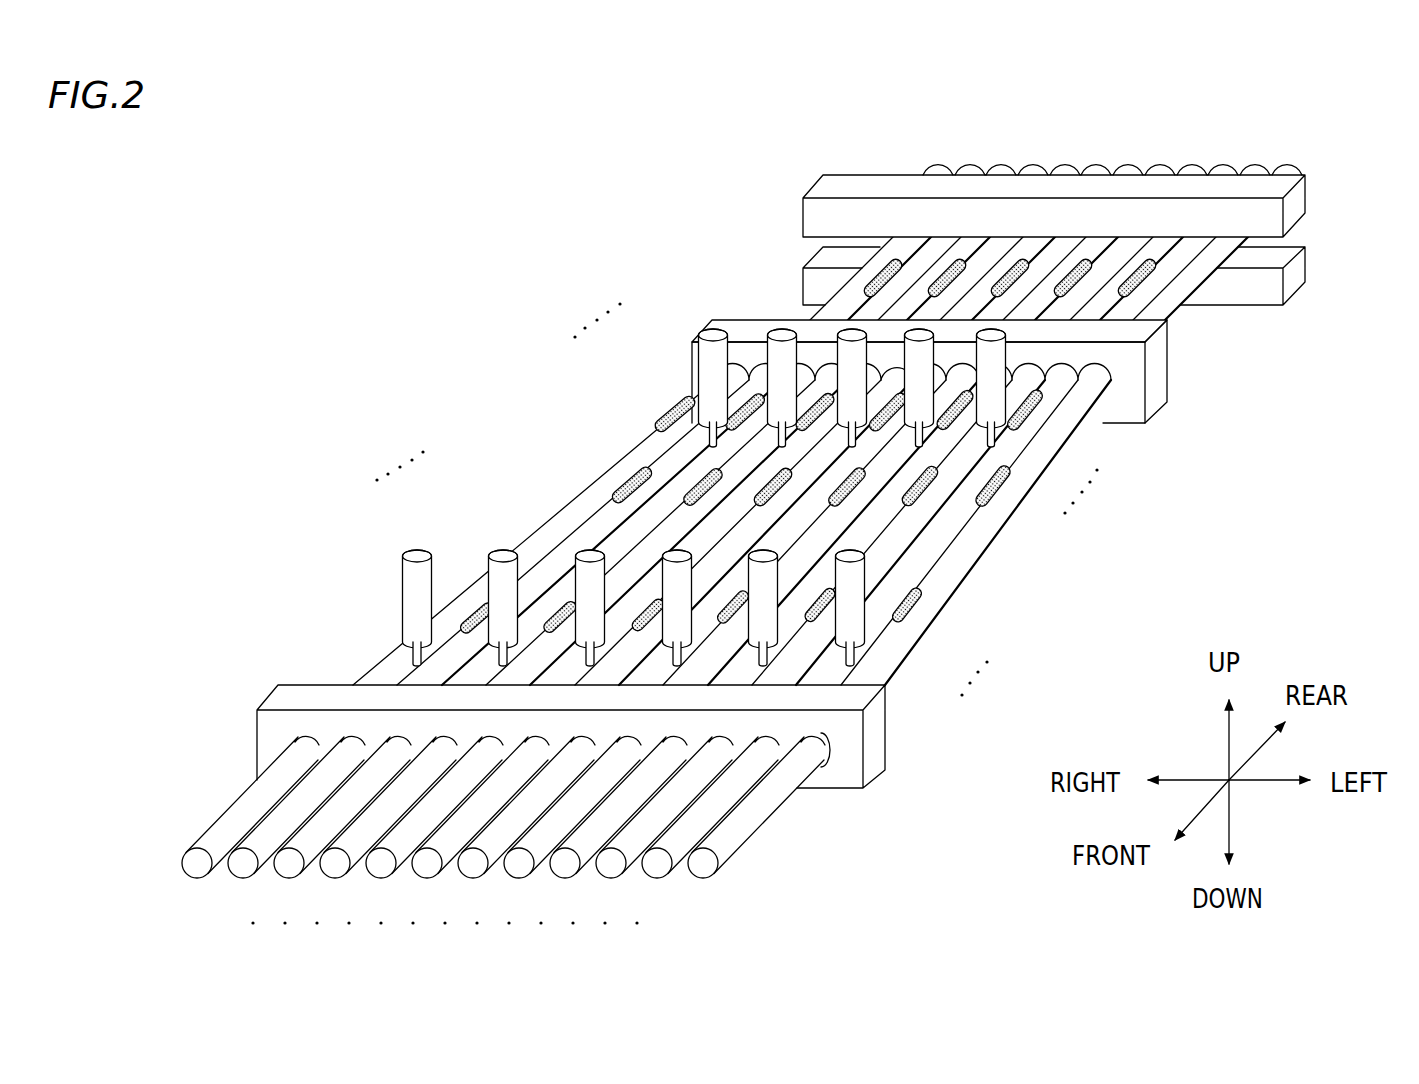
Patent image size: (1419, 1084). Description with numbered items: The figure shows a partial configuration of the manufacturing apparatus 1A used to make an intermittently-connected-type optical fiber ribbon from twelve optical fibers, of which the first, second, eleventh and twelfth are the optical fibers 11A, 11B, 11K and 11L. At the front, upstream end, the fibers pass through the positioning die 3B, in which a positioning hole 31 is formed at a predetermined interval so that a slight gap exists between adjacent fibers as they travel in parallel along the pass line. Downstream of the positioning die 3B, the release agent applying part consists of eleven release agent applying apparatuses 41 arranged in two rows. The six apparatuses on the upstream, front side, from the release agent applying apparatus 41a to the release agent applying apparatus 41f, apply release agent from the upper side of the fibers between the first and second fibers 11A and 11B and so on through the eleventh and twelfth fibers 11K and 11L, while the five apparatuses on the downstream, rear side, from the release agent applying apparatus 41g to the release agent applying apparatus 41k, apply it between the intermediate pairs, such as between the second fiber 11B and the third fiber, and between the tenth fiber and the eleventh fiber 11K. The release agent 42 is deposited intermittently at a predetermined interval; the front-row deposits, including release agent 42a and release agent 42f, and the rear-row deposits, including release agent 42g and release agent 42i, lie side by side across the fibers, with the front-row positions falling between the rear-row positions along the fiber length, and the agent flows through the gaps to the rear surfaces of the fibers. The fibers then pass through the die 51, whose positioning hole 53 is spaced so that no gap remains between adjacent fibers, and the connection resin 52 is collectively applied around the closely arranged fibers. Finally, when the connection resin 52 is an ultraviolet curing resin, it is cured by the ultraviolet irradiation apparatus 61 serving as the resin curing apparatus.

The manufacturing apparatus 1A is at (500, 258).
The positioning die 3B is at (885, 760).
The optical fiber 11A is at (190, 876).
The optical fiber 11B is at (238, 874).
The optical fiber 11K is at (660, 876).
The optical fiber 11L is at (706, 876).
The positioning hole 31 is at (823, 738).
The release agent applying apparatus 41 is at (657, 270).
The release agent applying apparatus 41a is at (407, 580).
The release agent applying apparatus 41f is at (838, 552).
The release agent applying apparatus 41g is at (705, 374).
The release agent applying apparatus 41k is at (988, 348).
The release agent 42 is at (808, 497).
The release agent 42a is at (480, 628).
The release agent 42f is at (912, 610).
The release agent 42g is at (640, 486).
The release agent 42i is at (823, 478).
The die 51 is at (998, 395).
The connection resin 52 is at (1200, 250).
The positioning hole 53 is at (1145, 397).
The ultraviolet irradiation apparatus 61 is at (1277, 282).